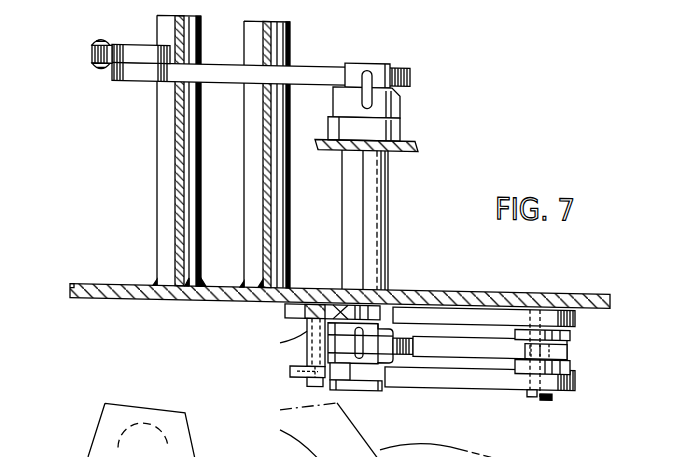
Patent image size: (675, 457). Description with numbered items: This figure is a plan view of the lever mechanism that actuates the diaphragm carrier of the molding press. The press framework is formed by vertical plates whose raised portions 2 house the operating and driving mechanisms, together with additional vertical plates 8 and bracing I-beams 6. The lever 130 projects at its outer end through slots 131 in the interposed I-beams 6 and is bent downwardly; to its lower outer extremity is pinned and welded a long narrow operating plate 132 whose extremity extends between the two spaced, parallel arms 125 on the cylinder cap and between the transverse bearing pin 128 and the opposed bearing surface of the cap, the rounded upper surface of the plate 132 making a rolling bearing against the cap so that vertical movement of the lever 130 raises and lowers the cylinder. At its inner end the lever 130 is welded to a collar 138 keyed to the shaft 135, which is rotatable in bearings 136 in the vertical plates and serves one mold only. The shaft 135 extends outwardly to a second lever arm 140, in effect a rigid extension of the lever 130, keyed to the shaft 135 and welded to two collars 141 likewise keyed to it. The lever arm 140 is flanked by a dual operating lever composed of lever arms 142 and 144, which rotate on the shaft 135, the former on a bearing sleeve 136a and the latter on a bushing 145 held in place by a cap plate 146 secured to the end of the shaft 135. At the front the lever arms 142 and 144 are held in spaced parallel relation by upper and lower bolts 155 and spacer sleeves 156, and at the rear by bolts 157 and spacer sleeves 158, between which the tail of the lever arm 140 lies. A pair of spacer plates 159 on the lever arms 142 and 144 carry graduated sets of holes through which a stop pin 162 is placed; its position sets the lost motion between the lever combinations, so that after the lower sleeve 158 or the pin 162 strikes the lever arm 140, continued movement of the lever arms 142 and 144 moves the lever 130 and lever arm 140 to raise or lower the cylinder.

The raised portions 2 is at (174, 304).
The I-beams 6 is at (221, 151).
The additional vertical plates 8 is at (410, 147).
The arms 125 is at (101, 77).
The transverse bearing pin 128 is at (92, 58).
The lever 130 is at (311, 70).
The slots 131 is at (262, 64).
The operating plate 132 is at (148, 35).
The shaft 135 is at (372, 220).
The bearings 136 is at (345, 136).
The bearing sleeve 136a is at (345, 305).
The collar 138 is at (401, 110).
The second lever arm 140 is at (478, 345).
The collars 141 is at (409, 304).
The lever arm 142 is at (504, 316).
The lever arm 144 is at (452, 372).
The bushing 145 is at (342, 381).
The cap plate 146 is at (357, 390).
The bolts 155 is at (300, 394).
The spacer sleeves 156 is at (306, 349).
The bolts 157 is at (553, 390).
The spacer sleeves 158 is at (563, 346).
The spacer plates 159 is at (571, 320).
The stop pin 162 is at (543, 397).